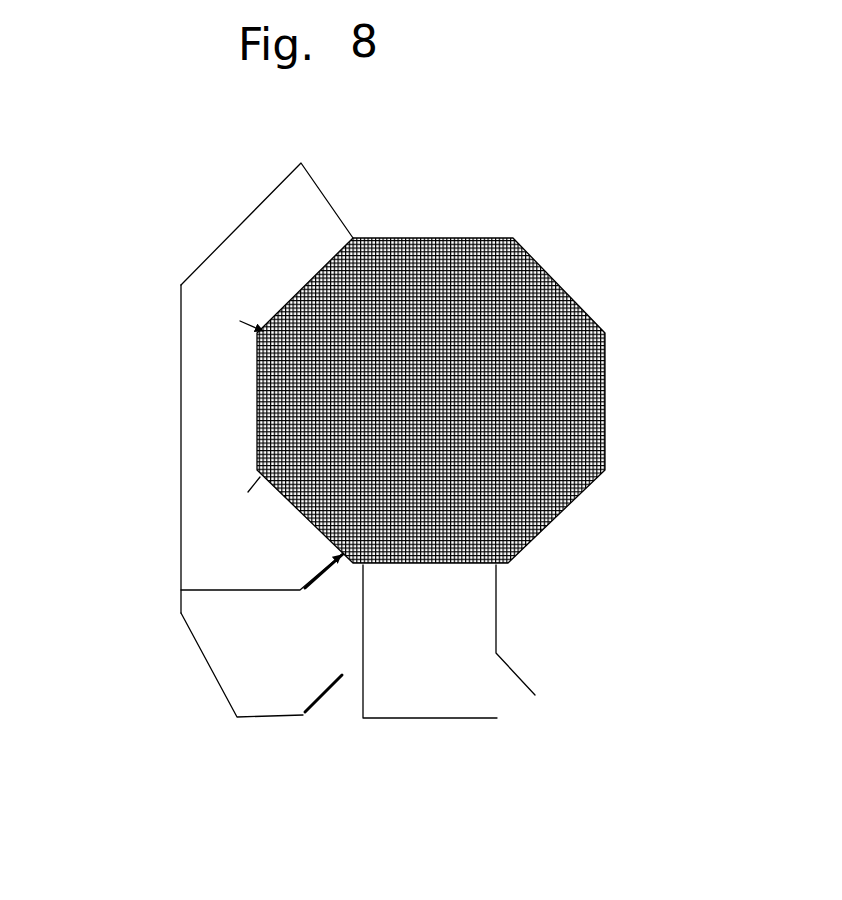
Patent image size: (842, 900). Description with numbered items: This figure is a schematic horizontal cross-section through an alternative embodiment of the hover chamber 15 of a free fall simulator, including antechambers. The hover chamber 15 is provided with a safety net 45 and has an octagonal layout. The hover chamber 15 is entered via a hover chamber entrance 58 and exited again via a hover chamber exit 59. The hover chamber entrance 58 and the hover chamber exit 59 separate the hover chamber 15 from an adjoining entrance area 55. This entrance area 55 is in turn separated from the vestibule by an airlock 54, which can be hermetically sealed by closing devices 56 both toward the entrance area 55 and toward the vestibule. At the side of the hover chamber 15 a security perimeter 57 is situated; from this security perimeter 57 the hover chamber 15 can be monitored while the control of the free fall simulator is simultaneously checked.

The hover chamber 15 is at (547, 320).
The safety net 45 is at (610, 373).
The airlock 54 is at (242, 655).
The entrance area 55 is at (205, 427).
The closing devices 56 is at (320, 583).
The security perimeter 57 is at (420, 693).
The hover chamber entrance 58 is at (307, 507).
The hover chamber exit 59 is at (293, 300).